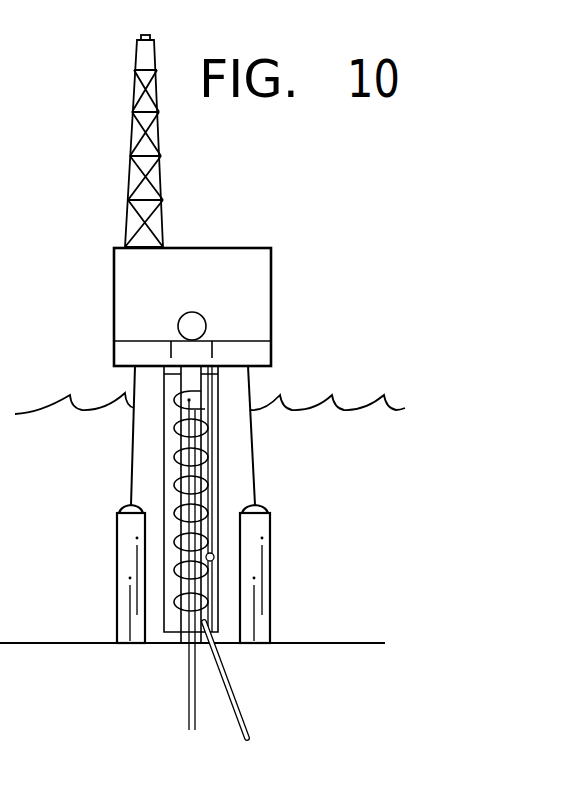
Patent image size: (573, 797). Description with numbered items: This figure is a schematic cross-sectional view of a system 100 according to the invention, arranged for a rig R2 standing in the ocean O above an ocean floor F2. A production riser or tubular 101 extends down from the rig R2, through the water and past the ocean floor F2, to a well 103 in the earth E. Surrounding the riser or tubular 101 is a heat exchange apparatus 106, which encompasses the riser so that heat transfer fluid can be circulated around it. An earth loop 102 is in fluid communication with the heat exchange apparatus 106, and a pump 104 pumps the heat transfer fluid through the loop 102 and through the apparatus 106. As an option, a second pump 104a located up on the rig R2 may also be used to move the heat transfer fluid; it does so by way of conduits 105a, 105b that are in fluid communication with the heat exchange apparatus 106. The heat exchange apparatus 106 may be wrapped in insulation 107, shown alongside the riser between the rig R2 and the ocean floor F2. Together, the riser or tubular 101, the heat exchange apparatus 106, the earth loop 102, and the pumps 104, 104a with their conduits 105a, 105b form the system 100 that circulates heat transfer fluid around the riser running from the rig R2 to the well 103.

The system 100 is at (214, 552).
The production riser or tubular 101 is at (183, 467).
The earth loop 102 is at (236, 700).
The well 103 is at (187, 690).
The pump 104 is at (214, 557).
The pump 104a is at (176, 332).
The conduit 105a is at (170, 346).
The conduit 105b is at (208, 333).
The heat exchange apparatus 106 is at (177, 429).
The insulation 107 is at (167, 520).
The rig R2 is at (272, 303).
The ocean O is at (25, 484).
The earth E is at (357, 685).
The ocean floor F2 is at (25, 642).